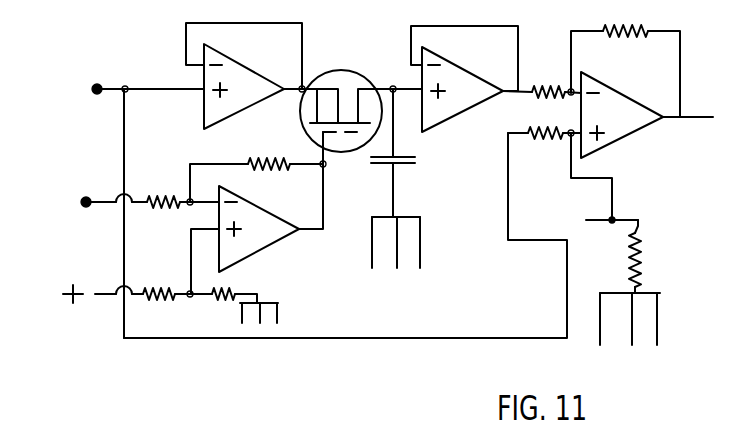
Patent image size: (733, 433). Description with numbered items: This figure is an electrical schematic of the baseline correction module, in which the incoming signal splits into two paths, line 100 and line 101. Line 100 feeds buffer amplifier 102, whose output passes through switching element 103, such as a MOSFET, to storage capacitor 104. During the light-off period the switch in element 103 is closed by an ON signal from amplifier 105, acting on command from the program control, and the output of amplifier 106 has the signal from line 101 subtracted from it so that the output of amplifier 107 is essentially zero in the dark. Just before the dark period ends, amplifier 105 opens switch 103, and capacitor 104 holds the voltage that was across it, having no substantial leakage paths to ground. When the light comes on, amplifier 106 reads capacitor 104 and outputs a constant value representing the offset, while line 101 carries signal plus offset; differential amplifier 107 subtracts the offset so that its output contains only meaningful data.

The line 100 is at (157, 86).
The line 101 is at (124, 246).
The buffer amplifier 102 is at (283, 66).
The switching element 103 is at (323, 70).
The storage capacitor 104 is at (400, 168).
The amplifier 105 is at (263, 235).
The amplifier 106 is at (496, 58).
The differential amplifier 107 is at (625, 95).